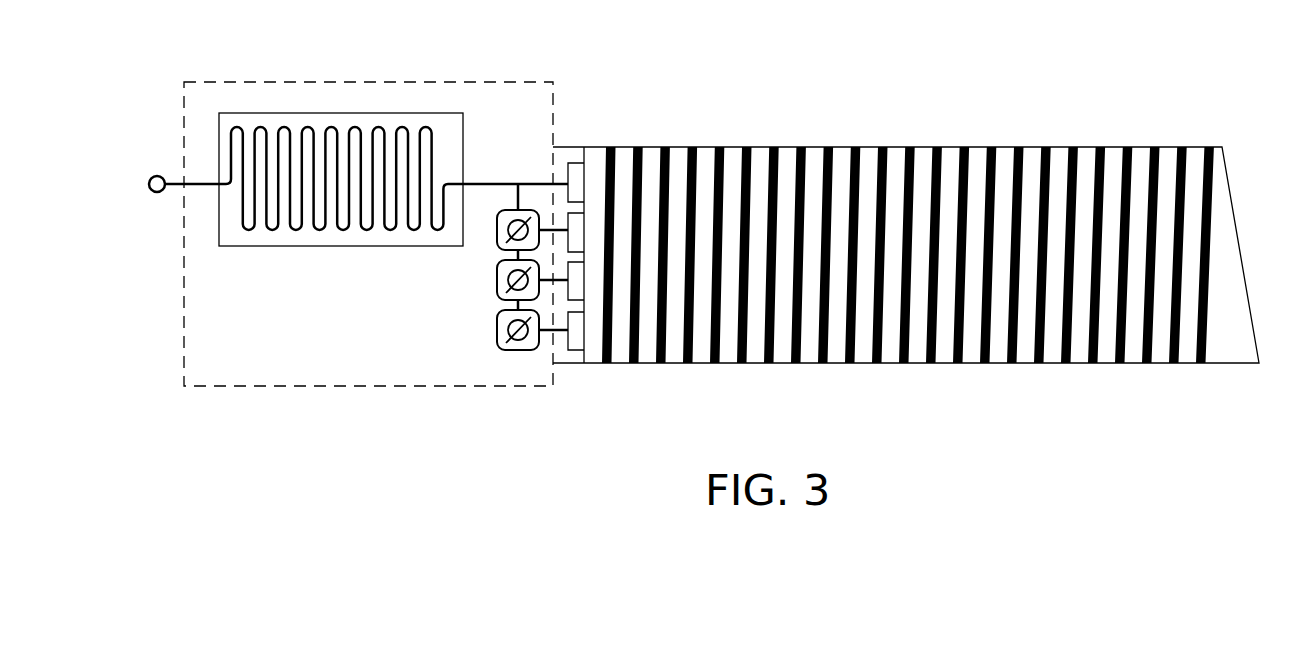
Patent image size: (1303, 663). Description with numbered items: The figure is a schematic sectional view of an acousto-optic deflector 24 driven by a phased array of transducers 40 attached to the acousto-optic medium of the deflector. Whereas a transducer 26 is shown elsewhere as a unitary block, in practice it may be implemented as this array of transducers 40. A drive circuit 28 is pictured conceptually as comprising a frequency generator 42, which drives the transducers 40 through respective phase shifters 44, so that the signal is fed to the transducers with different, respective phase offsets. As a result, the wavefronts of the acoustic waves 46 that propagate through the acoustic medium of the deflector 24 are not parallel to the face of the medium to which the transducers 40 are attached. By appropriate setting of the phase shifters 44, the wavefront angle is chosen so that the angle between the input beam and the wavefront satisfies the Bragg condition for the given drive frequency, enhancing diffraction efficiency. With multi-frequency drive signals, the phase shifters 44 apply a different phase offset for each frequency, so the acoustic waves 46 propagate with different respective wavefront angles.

The acousto-optic deflector 24 is at (921, 242).
The transducer 26 is at (566, 147).
The drive circuit 28 is at (257, 82).
The transducers 40 is at (576, 189).
The frequency generator 42 is at (267, 246).
The phase shifters 44 is at (496, 240).
The acoustic waves 46 is at (798, 282).